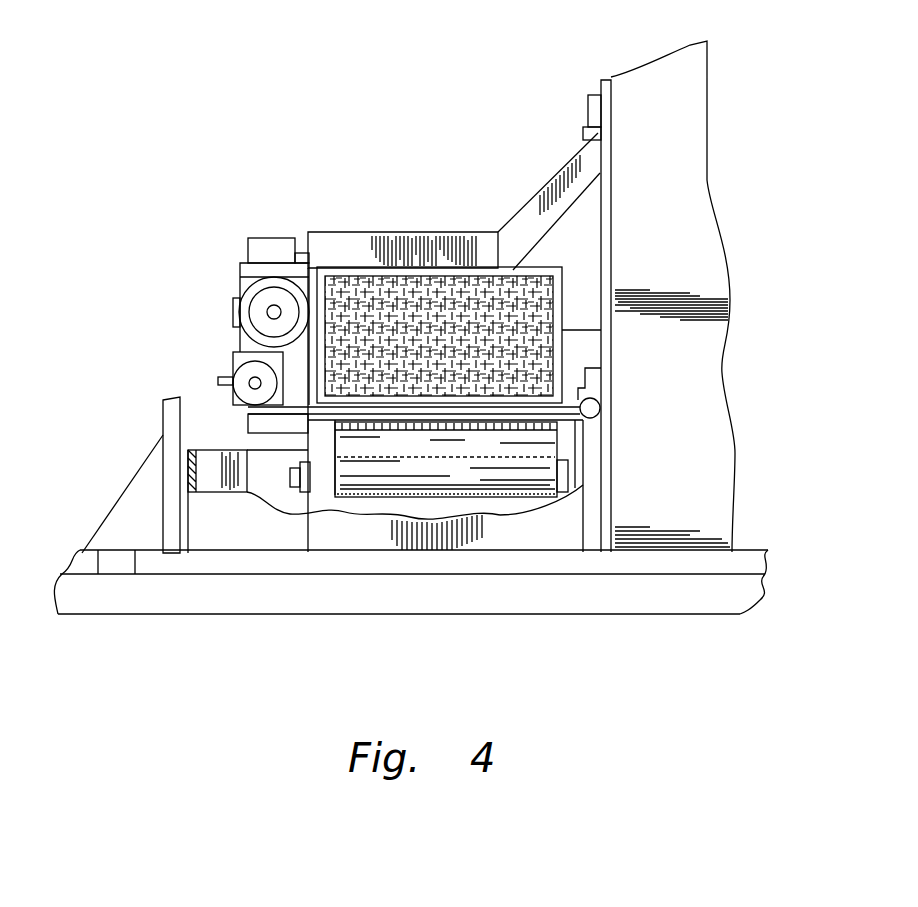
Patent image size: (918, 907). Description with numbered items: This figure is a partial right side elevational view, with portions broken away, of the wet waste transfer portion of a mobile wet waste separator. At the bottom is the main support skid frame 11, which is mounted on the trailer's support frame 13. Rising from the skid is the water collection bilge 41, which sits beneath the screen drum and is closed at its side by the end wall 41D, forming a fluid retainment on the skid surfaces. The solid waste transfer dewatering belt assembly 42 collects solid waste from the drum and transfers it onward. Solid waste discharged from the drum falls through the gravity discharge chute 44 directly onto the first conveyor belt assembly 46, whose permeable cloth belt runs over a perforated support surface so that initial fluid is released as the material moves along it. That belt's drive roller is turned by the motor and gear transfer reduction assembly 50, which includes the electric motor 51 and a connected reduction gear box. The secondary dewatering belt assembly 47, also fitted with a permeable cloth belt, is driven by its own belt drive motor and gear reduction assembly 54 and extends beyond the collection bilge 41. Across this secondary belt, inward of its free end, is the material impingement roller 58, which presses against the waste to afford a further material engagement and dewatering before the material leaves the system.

The main support skid frame 11 is at (652, 563).
The support frame 13 is at (460, 597).
The water collection bilge 41 is at (270, 537).
The end wall 41D is at (222, 522).
The solid waste transfer dewatering belt assembly 42 is at (720, 173).
The gravity discharge chute 44 is at (573, 233).
The first conveyor belt assembly 46 is at (378, 495).
The secondary dewatering belt assembly 47 is at (400, 228).
The motor and gear transfer reduction assembly 50 is at (218, 352).
The electric motor 51 is at (253, 383).
The belt drive motor and gear reduction assembly 54 is at (217, 262).
The material impingement roller 58 is at (333, 232).